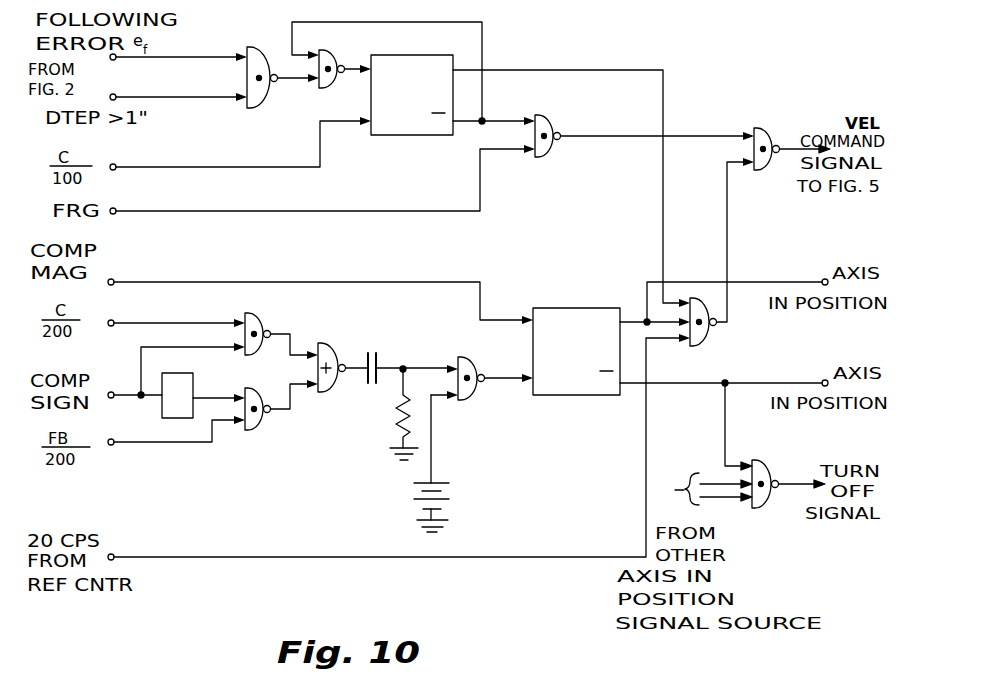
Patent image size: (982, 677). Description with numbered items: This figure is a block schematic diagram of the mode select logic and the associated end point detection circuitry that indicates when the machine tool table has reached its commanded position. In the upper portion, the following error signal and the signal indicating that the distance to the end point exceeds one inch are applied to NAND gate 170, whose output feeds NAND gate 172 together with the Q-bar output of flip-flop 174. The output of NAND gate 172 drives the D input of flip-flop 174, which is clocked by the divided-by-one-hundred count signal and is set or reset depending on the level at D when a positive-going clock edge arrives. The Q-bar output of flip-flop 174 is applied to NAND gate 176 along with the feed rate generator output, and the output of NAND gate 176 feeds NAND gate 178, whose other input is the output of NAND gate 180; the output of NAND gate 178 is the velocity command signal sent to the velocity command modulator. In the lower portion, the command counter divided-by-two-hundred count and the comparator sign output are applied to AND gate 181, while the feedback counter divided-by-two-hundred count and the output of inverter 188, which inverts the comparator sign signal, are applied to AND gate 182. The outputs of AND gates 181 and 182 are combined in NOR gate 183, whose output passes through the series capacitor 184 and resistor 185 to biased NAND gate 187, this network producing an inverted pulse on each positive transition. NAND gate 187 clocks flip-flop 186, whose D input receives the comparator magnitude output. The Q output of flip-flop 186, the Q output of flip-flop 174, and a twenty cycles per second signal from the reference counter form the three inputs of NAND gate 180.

The NAND gate 170 is at (258, 47).
The NAND gate 172 is at (334, 47).
The flip-flop 174 is at (415, 55).
The NAND gate 176 is at (545, 116).
The NAND gate 178 is at (759, 128).
The NAND gate 180 is at (705, 333).
The AND gate 181 is at (252, 314).
The AND gate 182 is at (257, 427).
The NOR gate 183 is at (331, 333).
The capacitor 184 is at (368, 353).
The resistor 185 is at (399, 416).
The flip-flop 186 is at (563, 308).
The NAND gate 187 is at (470, 349).
The inverter 188 is at (186, 375).